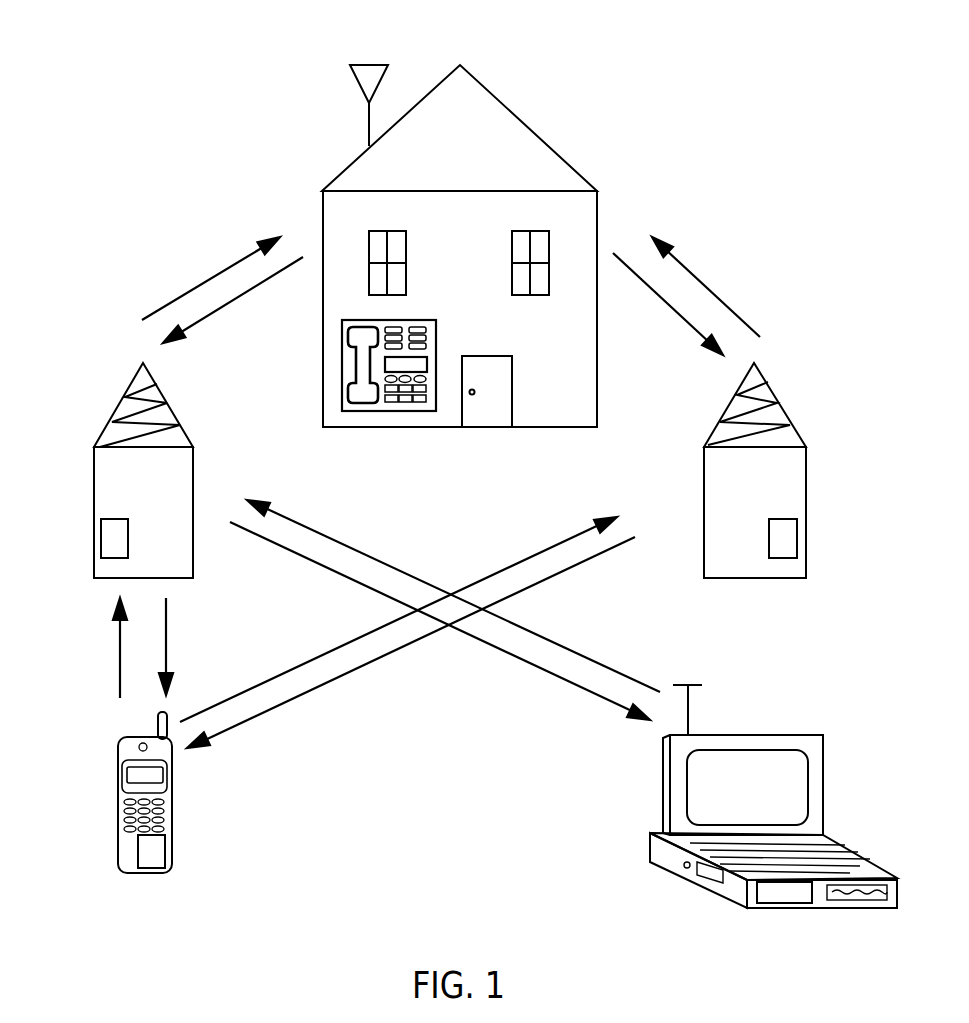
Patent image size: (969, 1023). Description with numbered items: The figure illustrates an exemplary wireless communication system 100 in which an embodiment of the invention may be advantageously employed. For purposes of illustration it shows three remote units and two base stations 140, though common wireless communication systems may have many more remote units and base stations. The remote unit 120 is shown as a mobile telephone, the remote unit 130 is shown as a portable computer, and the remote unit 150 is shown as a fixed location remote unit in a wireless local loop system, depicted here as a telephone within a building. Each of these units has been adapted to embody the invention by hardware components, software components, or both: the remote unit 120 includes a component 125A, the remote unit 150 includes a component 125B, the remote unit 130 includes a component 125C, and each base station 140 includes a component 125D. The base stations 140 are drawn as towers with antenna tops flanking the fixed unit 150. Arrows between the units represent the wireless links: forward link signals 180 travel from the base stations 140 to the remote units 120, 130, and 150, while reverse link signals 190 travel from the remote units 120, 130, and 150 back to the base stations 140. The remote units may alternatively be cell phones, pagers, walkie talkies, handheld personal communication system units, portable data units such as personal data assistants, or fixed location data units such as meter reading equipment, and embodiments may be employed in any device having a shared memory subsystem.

The wireless communication system 100 is at (337, 234).
The remote unit 120 is at (122, 745).
The component 125A is at (153, 860).
The component 125B is at (416, 414).
The component 125C is at (790, 895).
The component 125D is at (101, 538).
The remote unit 130 is at (803, 733).
The base station 140 is at (122, 405).
The remote unit 150 is at (342, 378).
The forward link signal 180 is at (213, 275).
The reverse link signal 190 is at (218, 310).